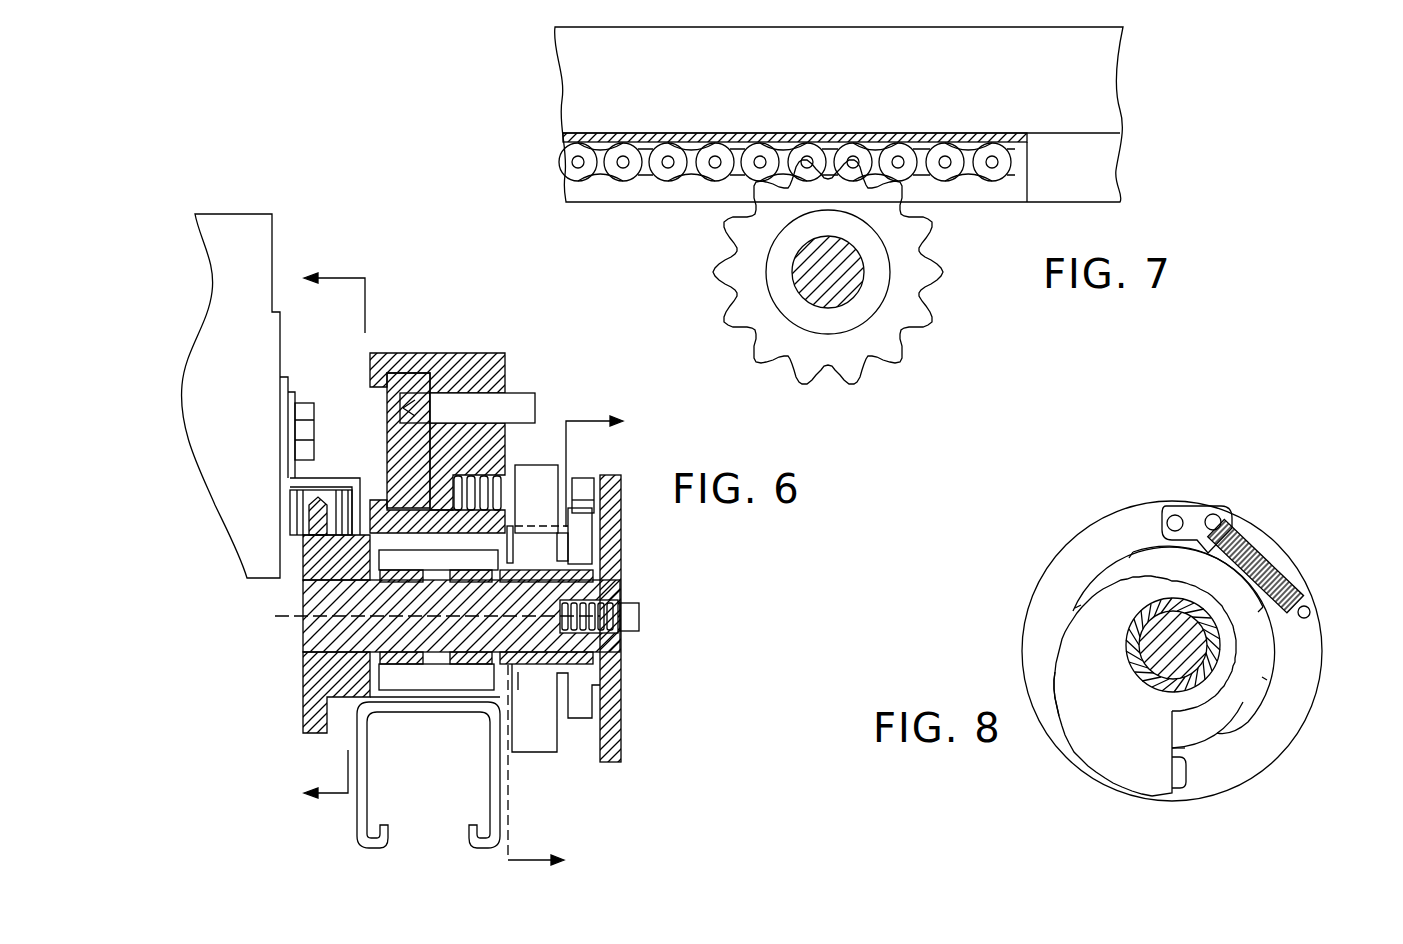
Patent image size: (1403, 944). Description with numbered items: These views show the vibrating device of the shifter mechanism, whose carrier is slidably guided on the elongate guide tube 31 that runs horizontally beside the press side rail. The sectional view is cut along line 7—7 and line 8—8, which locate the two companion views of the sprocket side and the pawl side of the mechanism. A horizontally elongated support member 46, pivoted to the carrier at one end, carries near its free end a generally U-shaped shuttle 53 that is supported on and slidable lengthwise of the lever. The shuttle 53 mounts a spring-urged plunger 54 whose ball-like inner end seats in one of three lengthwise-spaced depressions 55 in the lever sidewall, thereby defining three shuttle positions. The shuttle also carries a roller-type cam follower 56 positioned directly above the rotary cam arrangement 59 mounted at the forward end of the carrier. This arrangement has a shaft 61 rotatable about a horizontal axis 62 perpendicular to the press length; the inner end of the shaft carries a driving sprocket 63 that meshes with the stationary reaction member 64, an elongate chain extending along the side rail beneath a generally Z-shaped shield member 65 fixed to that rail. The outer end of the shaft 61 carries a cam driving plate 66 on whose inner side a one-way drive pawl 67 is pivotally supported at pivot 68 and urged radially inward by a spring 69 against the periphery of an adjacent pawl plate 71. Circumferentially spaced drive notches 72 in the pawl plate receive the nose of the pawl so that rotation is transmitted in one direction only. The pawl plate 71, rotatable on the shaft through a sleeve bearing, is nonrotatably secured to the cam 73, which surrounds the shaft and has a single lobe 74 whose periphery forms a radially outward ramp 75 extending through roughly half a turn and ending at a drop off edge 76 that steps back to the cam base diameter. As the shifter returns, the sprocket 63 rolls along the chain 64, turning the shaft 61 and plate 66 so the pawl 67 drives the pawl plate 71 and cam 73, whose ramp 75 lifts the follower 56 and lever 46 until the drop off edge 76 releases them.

In FIG. 6, the line 7— 7 is at (320, 533).
In FIG. 6, the line 8— 8 is at (580, 644).
In FIG. 6, the guide tube 31 is at (352, 808).
In FIG. 6, the support member 46 is at (395, 458).
In FIG. 6, the shuttle 53 is at (487, 360).
In FIG. 6, the spring-urged plunger 54 is at (532, 396).
In FIG. 6, the depression 55 is at (415, 380).
In FIG. 6, the roller-type cam follower 56 is at (542, 466).
In FIG. 6, the rotary cam arrangement 59 is at (623, 580).
In FIG. 6, the shaft 61 is at (312, 624).
In FIG. 7, the shaft 61 is at (852, 289).
In FIG. 6, the axis 62 is at (296, 607).
In FIG. 6, the driving sprocket 63 is at (315, 698).
In FIG. 7, the driving sprocket 63 is at (903, 302).
In FIG. 6, the reaction member 64 is at (292, 508).
In FIG. 7, the reaction member 64 is at (678, 172).
In FIG. 6, the shield member 65 is at (337, 479).
In FIG. 7, the shield member 65 is at (1087, 170).
In FIG. 6, the cam driving plate 66 is at (610, 706).
In FIG. 8, the cam driving plate 66 is at (1303, 668).
In FIG. 6, the one-way drive pawl 67 is at (583, 488).
In FIG. 8, the one-way drive pawl 67 is at (1200, 508).
In FIG. 8, the pivot 68 is at (1164, 516).
In FIG. 8, the spring 69 is at (1260, 562).
In FIG. 6, the pawl plate 71 is at (582, 557).
In FIG. 8, the pawl plate 71 is at (1243, 705).
In FIG. 8, the drive notch 72 is at (1215, 735).
In FIG. 6, the cam 73 is at (540, 738).
In FIG. 8, the cam 73 is at (1073, 658).
In FIG. 8, the lobe 74 is at (1102, 723).
In FIG. 8, the ramp 75 is at (1062, 716).
In FIG. 8, the drop off edge 76 is at (1183, 788).